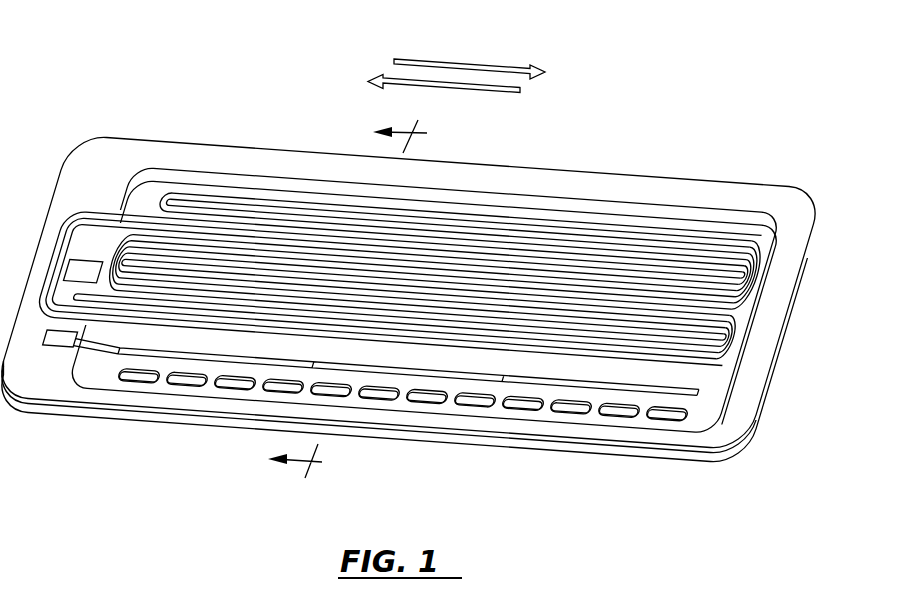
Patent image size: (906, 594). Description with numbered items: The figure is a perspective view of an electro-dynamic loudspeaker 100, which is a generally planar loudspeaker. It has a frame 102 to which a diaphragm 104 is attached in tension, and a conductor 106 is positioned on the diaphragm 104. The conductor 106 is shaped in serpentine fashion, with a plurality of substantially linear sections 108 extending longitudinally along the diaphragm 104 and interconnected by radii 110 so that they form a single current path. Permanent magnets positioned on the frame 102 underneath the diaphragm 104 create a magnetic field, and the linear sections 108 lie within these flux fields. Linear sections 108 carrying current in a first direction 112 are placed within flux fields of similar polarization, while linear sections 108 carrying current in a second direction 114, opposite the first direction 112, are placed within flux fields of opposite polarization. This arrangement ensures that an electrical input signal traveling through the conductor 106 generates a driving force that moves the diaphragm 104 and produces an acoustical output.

The electro-dynamic loudspeaker 100 is at (660, 106).
The frame 102 is at (72, 414).
The diaphragm 104 is at (130, 128).
The conductor 106 is at (465, 246).
The linear sections 108 is at (482, 338).
The radii 110 is at (760, 276).
The first direction 112 is at (482, 63).
The second direction 114 is at (511, 96).